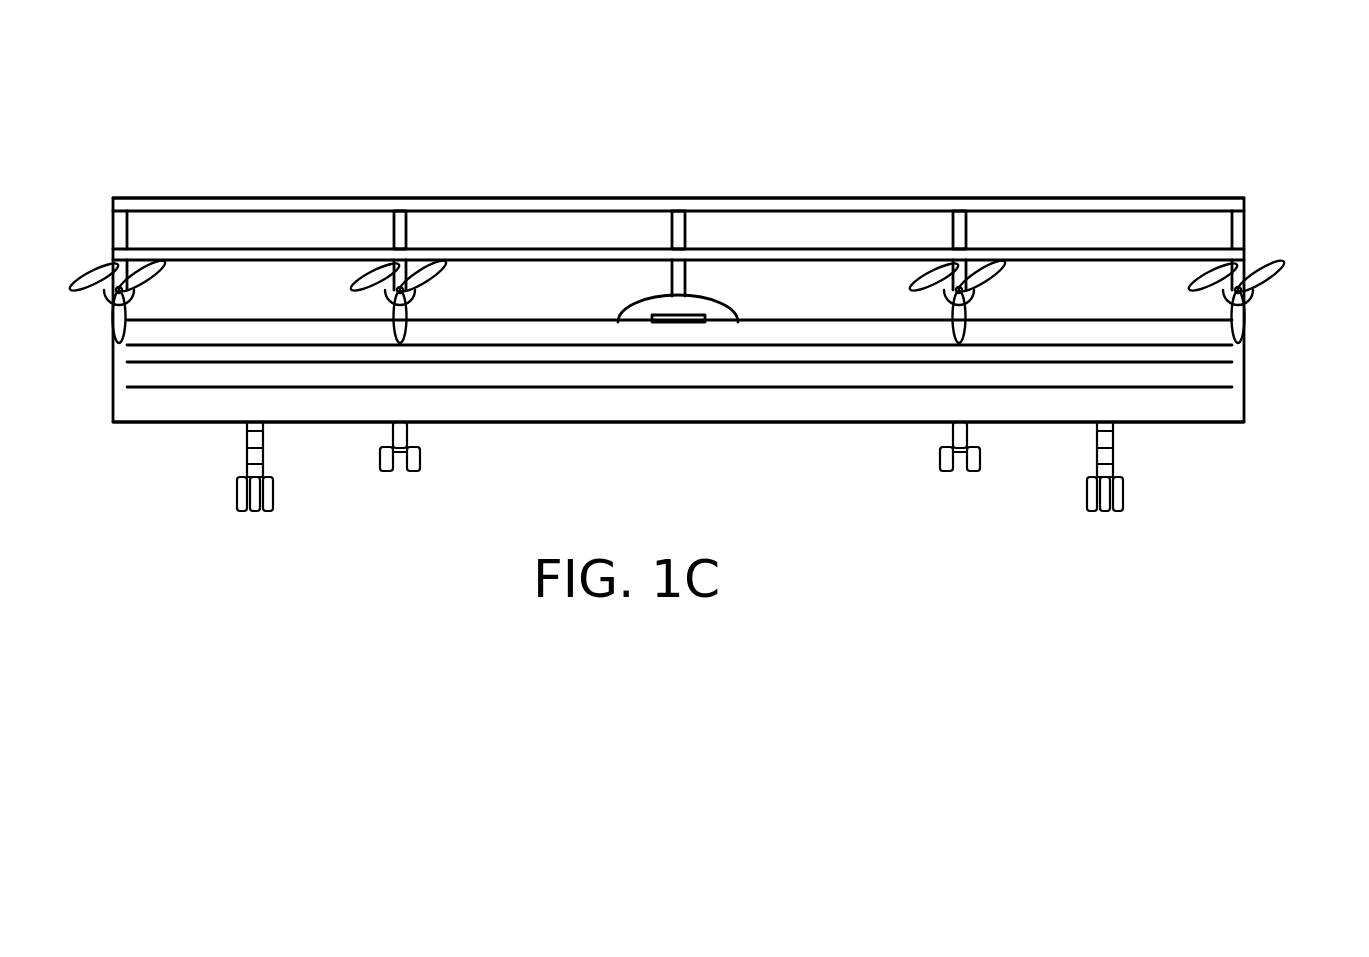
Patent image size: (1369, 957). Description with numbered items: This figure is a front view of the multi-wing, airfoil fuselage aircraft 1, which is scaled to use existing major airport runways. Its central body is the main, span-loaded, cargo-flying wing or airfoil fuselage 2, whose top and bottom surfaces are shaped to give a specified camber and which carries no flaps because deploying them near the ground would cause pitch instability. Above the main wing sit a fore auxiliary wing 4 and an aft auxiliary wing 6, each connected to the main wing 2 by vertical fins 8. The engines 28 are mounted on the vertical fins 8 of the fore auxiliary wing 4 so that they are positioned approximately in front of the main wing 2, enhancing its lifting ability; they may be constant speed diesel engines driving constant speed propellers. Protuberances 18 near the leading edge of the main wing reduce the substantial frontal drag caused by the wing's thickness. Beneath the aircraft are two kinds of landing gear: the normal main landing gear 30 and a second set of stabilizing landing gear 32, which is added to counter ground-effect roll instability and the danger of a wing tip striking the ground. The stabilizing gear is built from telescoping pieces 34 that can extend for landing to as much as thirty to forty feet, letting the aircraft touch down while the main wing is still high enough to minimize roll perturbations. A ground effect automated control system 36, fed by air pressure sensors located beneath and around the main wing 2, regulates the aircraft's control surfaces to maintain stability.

The multi-wing, airfoil fuselage aircraft 1 is at (696, 265).
The main wing or airfoil fuselage 2 is at (1228, 377).
The fore auxiliary wing 4 is at (218, 257).
The aft auxiliary wing 6 is at (1133, 208).
The vertical fins 8 is at (1240, 230).
The protuberances 18 is at (1202, 392).
The engines 28 is at (1270, 270).
The main landing gear 30 is at (415, 458).
The stabilizing landing gear 32 is at (248, 455).
The telescoping pieces 34 is at (1092, 457).
The ground effect automated control system 36 is at (653, 313).